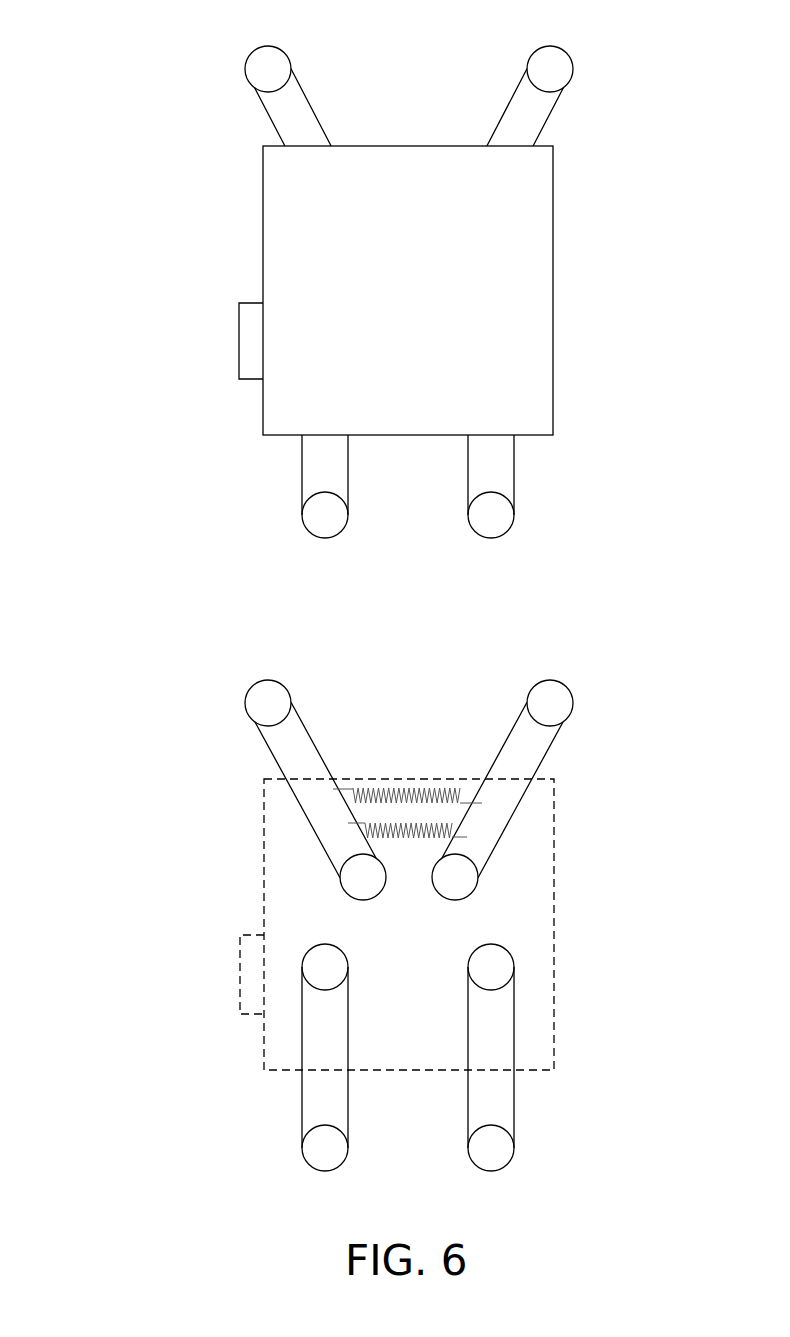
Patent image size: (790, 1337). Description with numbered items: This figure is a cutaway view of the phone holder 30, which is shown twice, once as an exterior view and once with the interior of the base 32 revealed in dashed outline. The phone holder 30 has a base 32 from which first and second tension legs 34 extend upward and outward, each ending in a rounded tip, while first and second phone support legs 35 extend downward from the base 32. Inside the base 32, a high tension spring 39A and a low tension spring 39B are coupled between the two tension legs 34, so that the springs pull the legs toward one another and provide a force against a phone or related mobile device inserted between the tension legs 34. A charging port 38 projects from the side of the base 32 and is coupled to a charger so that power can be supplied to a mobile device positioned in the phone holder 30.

The phone holder 30 is at (183, 70).
The base 32 is at (555, 993).
The tension legs 34 is at (265, 67).
The phone support legs 35 is at (327, 516).
The charging port 38 is at (246, 347).
The high tension spring 39A is at (413, 790).
The low tension spring 39B is at (413, 838).